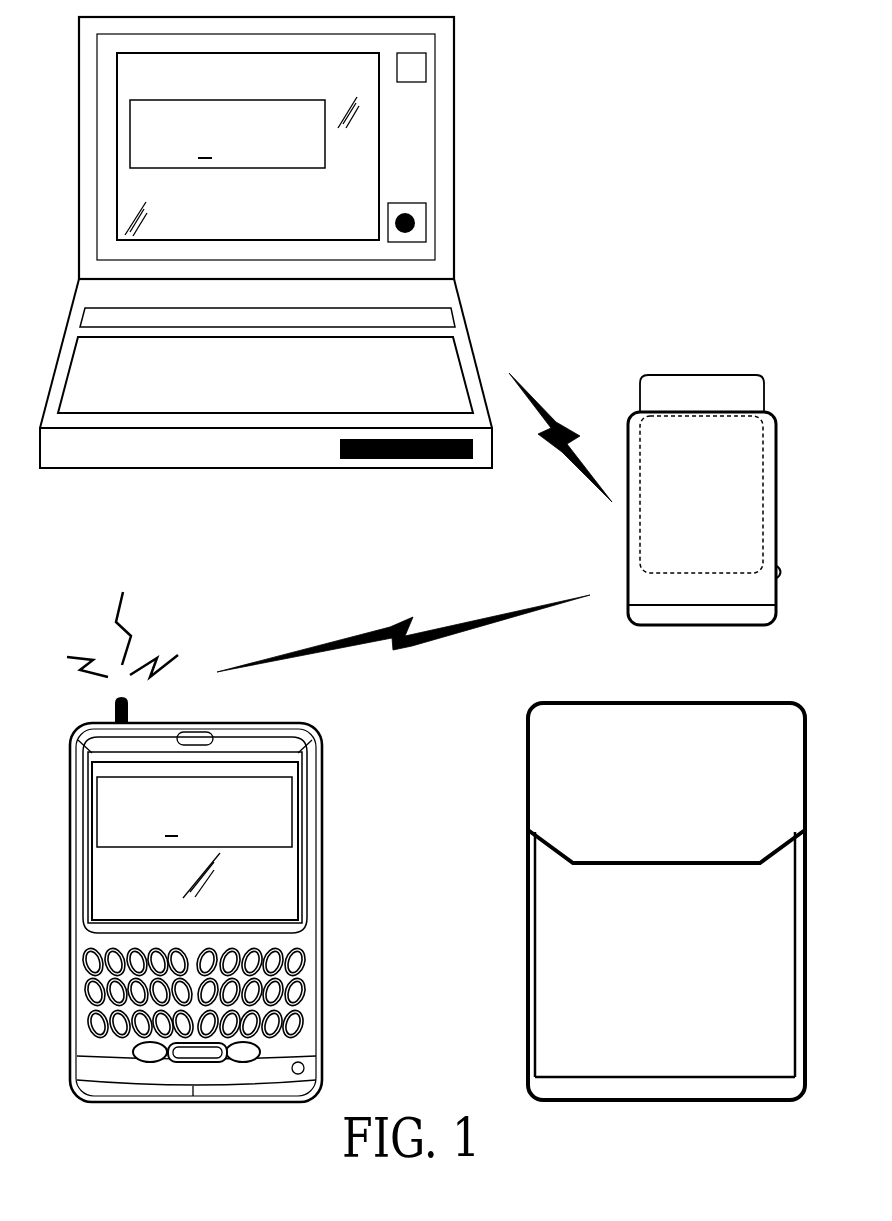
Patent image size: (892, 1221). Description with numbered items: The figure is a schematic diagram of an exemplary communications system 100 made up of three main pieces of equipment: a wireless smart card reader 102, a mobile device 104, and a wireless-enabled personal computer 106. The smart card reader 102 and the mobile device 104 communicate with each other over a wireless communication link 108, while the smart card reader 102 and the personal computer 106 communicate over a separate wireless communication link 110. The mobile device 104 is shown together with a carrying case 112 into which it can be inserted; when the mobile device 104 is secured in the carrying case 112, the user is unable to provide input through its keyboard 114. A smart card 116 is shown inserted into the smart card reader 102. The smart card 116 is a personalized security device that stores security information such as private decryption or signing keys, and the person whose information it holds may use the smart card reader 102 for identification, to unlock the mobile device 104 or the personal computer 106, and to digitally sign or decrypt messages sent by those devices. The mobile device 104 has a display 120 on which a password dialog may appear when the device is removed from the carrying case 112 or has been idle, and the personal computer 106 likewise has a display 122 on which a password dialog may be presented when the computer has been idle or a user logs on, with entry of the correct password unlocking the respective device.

The system 100 is at (625, 145).
The wireless smart card reader 102 is at (702, 625).
The mobile device 104 is at (225, 722).
The wireless-enabled personal computer 106 is at (253, 469).
The wireless communication link 108 is at (465, 633).
The wireless communication link 110 is at (545, 405).
The carrying case 112 is at (663, 703).
The keyboard 114 is at (302, 941).
The smart card 116 is at (702, 375).
The display 120 is at (268, 903).
The display 122 is at (332, 191).